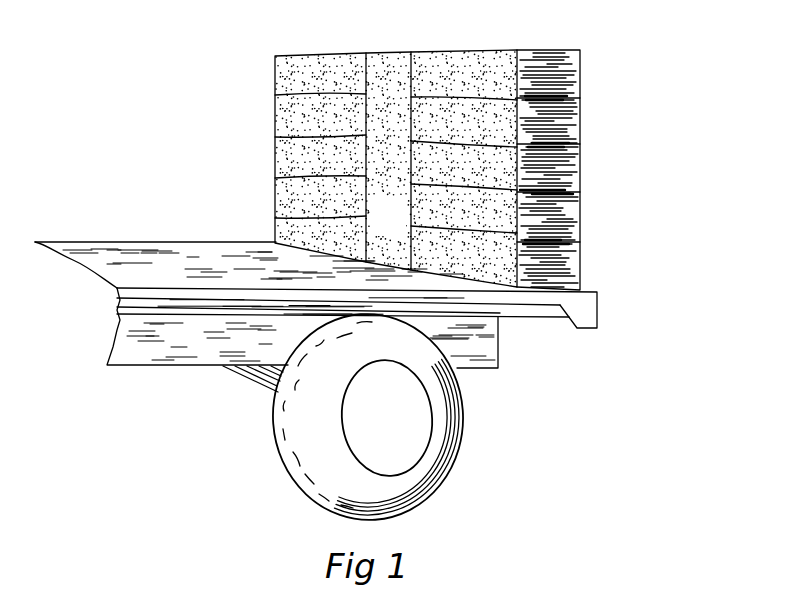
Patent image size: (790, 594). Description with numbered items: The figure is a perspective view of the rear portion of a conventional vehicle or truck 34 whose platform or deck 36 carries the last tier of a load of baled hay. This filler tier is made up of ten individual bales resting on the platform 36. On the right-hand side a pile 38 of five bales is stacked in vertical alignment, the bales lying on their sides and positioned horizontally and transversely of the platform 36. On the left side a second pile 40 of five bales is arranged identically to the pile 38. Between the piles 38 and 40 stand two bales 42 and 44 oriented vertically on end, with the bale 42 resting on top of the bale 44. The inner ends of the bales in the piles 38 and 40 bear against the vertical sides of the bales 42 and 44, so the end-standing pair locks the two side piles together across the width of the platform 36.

The vehicle 34 is at (498, 368).
The platform 36 is at (112, 242).
The pile 38 is at (582, 161).
The second pile 40 is at (275, 150).
The bale 42 is at (376, 50).
The bale 44 is at (388, 216).